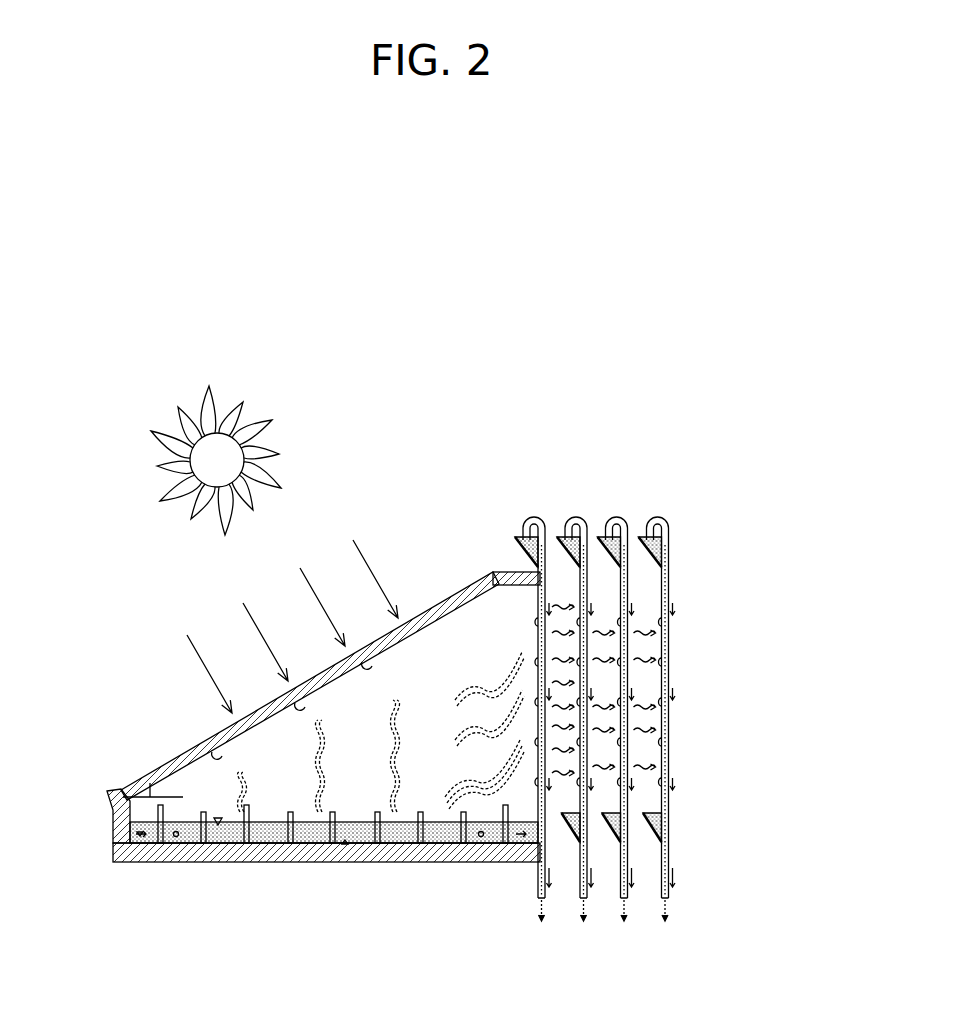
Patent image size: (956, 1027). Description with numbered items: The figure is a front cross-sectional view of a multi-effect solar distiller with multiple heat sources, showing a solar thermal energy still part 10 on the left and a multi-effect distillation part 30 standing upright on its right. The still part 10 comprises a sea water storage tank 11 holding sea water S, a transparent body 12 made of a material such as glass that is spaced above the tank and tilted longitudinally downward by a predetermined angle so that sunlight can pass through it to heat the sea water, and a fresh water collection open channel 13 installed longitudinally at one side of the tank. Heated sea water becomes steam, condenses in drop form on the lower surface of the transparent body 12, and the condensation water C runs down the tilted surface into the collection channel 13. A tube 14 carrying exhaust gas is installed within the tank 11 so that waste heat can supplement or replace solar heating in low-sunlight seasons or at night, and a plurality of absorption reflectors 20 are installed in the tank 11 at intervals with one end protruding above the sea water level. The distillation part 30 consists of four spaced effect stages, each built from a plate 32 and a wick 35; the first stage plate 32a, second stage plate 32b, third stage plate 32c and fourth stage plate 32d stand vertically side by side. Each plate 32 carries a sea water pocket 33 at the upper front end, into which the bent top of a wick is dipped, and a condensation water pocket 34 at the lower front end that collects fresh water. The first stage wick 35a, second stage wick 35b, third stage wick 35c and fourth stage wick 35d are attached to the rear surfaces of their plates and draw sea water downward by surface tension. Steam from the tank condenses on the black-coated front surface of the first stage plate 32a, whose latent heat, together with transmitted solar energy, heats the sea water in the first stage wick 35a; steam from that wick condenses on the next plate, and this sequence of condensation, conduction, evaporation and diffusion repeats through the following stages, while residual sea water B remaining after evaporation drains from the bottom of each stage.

The solar thermal energy still part 10 is at (148, 762).
The sea water storage tank 11 is at (283, 846).
The transparent body 12 is at (175, 760).
The fresh water collection open channel 13 is at (112, 843).
The tube 14 is at (164, 838).
The absorption reflector 20 is at (242, 845).
The multi-effect distillation part 30 is at (696, 515).
The plate 32 is at (668, 835).
The first stage plate 32a is at (490, 710).
The second stage plate 32b is at (572, 710).
The third stage plate 32c is at (621, 710).
The fourth stage plate 32d is at (694, 710).
The sea water pocket 33 is at (515, 540).
The condensation water pocket 34 is at (668, 818).
The wick 35 is at (672, 868).
The first stage wick 35a is at (529, 518).
The second stage wick 35b is at (570, 518).
The third stage wick 35c is at (612, 518).
The fourth stage wick 35d is at (660, 518).
The sea water S is at (346, 846).
The condensation water C is at (141, 838).
The residual sea water B is at (604, 926).